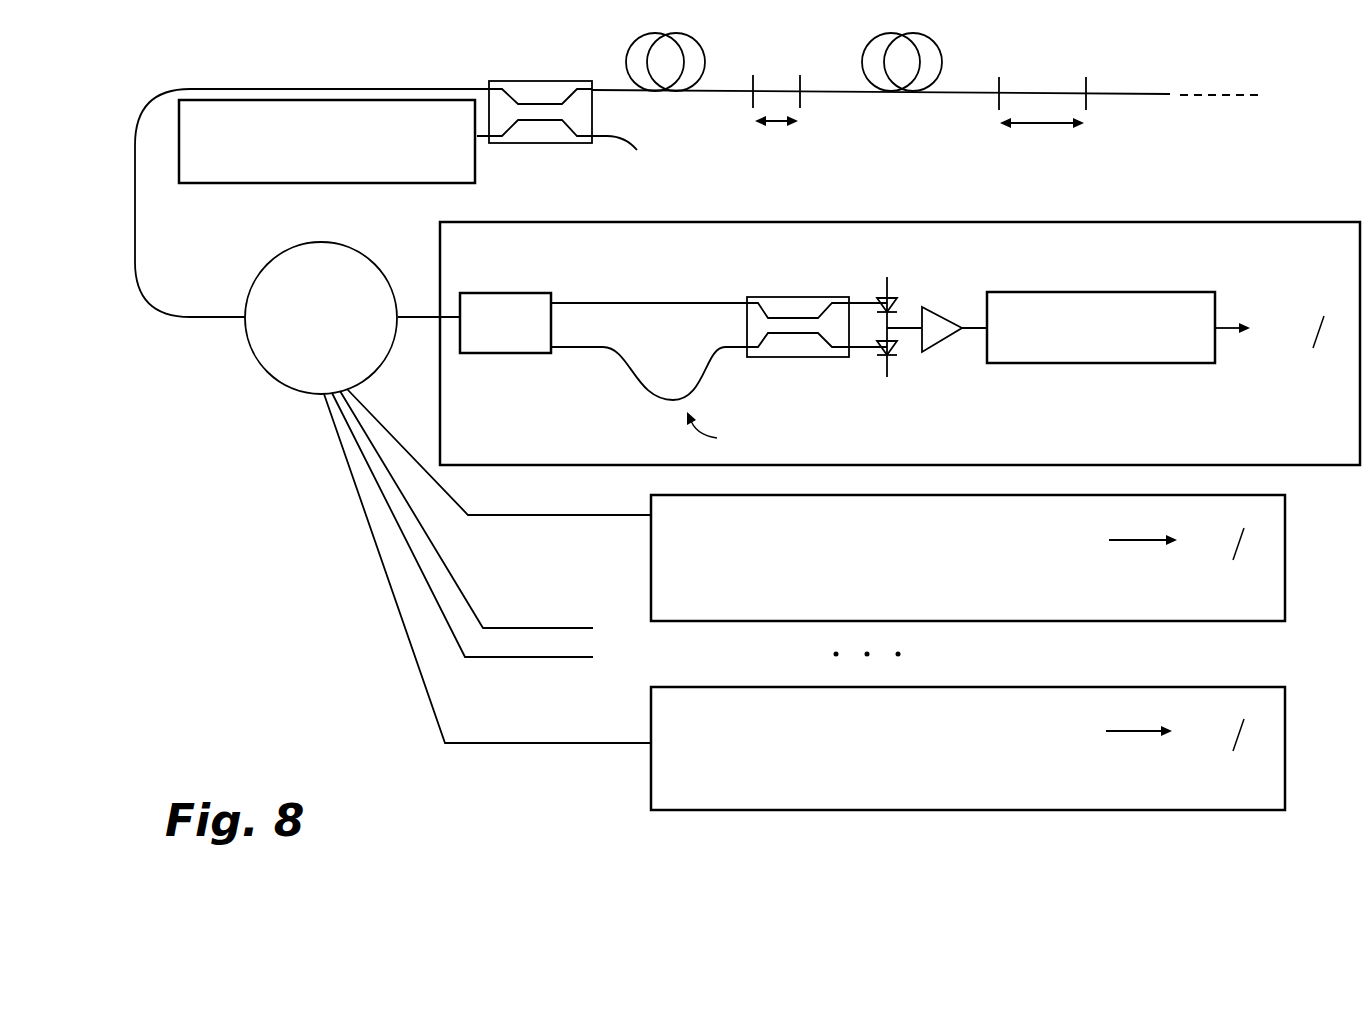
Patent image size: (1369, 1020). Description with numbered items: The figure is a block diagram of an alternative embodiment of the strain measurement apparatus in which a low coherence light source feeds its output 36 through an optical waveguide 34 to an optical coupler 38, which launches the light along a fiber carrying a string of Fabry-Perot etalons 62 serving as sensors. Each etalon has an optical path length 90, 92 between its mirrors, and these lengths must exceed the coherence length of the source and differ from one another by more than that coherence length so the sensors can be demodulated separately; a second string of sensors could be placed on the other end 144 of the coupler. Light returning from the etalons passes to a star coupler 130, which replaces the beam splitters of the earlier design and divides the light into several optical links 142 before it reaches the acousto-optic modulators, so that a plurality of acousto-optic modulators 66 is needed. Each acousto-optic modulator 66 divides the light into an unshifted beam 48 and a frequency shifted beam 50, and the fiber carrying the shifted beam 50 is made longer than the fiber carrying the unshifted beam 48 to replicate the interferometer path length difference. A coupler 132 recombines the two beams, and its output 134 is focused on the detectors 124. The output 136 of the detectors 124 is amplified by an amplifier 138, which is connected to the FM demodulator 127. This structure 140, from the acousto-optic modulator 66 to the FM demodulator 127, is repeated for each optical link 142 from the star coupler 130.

The optical waveguide 34 is at (640, 37).
The output of the low coherence light source 36 is at (273, 184).
The optical coupler 38 is at (546, 81).
The other end of the coupler 144 is at (626, 156).
The Fabry-Perot etalons 62 is at (782, 25).
The optical path length 90 is at (784, 124).
The optical path length 92 is at (1055, 125).
The star coupler 130 is at (261, 272).
The optical link 142 is at (364, 530).
The structure 140 is at (1092, 222).
The acousto-optic modulator 66 is at (510, 292).
The unshifted beam 48 is at (726, 302).
The frequency shifted beam 50 is at (600, 347).
The coupler 132 is at (793, 298).
The output of the coupler 134 is at (860, 305).
The detectors 124 is at (893, 305).
The output of the detectors 136 is at (908, 326).
The amplifier 138 is at (940, 348).
The FM demodulator 127 is at (1177, 292).